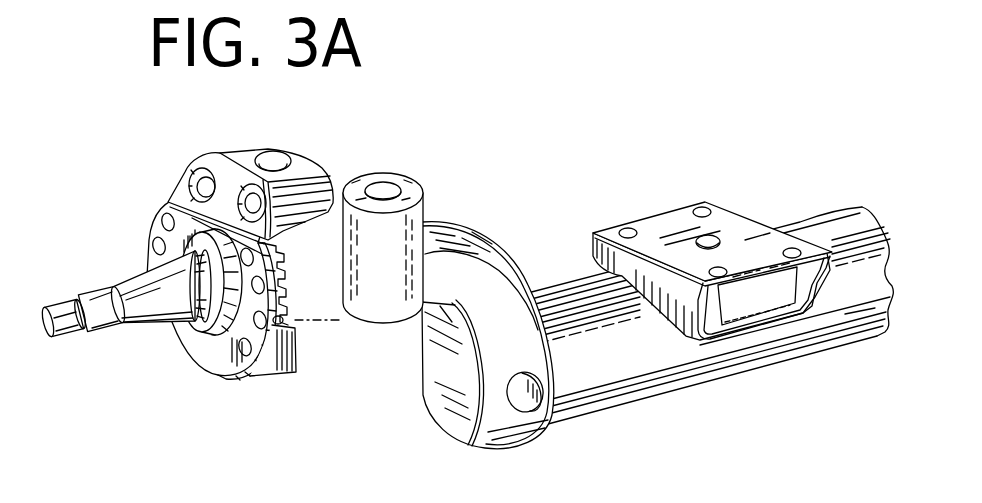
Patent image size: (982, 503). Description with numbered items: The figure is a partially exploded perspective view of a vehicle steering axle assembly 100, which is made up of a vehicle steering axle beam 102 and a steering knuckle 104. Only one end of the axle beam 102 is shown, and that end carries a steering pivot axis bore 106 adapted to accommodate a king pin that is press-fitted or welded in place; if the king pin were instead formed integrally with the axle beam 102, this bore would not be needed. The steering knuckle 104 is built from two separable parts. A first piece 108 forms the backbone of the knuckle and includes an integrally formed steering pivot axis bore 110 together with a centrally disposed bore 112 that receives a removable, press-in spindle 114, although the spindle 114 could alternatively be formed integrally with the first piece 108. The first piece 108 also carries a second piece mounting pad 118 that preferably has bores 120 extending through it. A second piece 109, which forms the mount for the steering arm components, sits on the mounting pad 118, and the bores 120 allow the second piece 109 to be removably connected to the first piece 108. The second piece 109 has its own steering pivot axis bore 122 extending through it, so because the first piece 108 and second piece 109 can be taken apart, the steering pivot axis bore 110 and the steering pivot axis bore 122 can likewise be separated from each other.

The vehicle steering axle assembly 100 is at (410, 147).
The vehicle steering axle beam 102 is at (838, 222).
The steering knuckle 104 is at (206, 381).
The steering pivot axis bore 106 is at (392, 188).
The first piece 108 is at (193, 335).
The second piece 109 is at (229, 173).
The steering pivot axis bore 110 is at (273, 377).
The centrally disposed bore 112 is at (167, 272).
The spindle 114 is at (74, 322).
The second piece mounting pad 118 is at (225, 175).
The bores 120 is at (200, 190).
The steering pivot axis bore 122 is at (278, 162).